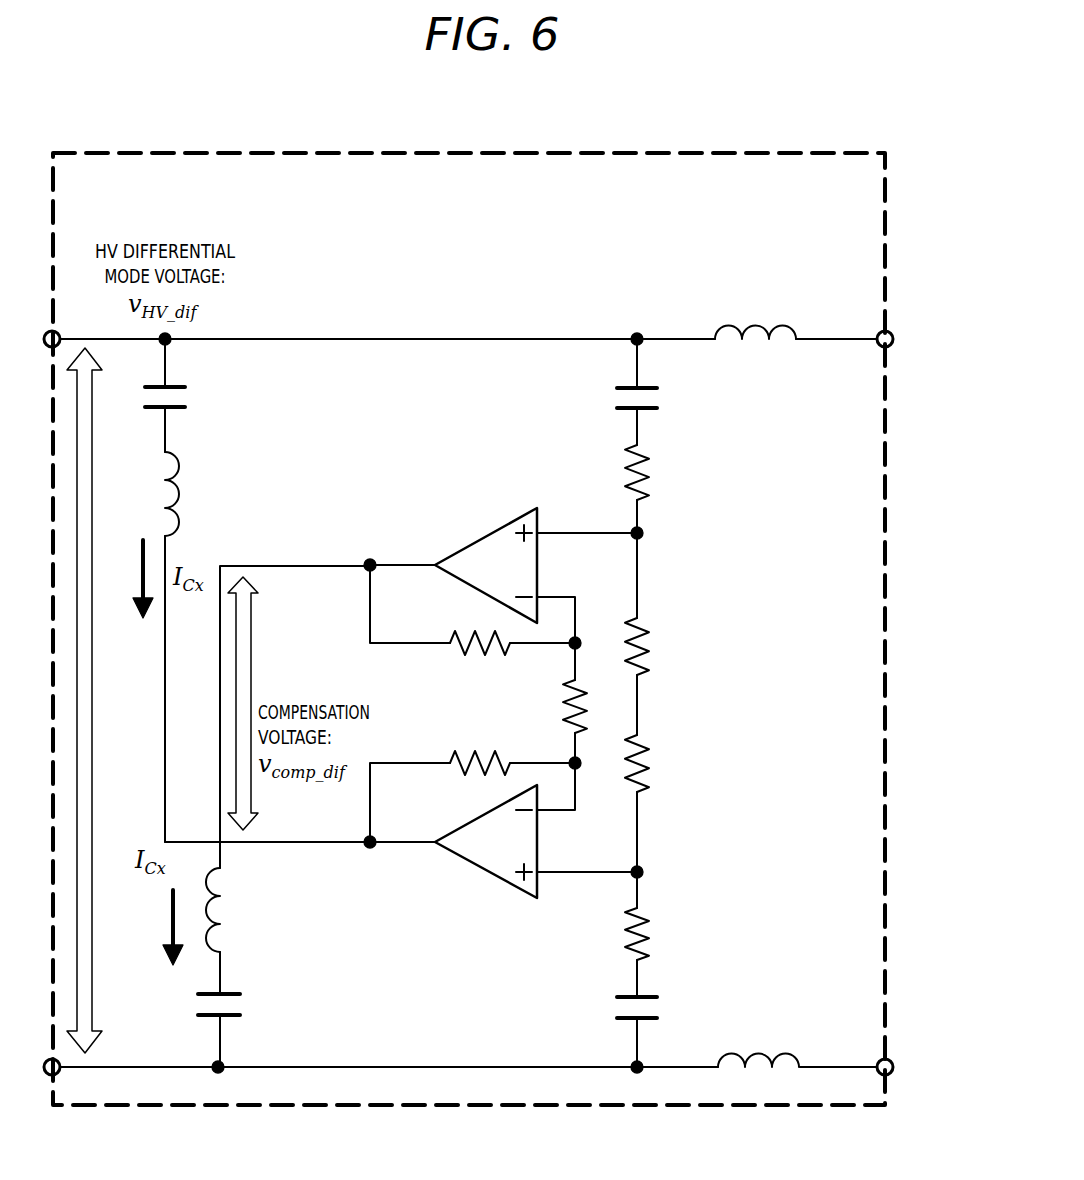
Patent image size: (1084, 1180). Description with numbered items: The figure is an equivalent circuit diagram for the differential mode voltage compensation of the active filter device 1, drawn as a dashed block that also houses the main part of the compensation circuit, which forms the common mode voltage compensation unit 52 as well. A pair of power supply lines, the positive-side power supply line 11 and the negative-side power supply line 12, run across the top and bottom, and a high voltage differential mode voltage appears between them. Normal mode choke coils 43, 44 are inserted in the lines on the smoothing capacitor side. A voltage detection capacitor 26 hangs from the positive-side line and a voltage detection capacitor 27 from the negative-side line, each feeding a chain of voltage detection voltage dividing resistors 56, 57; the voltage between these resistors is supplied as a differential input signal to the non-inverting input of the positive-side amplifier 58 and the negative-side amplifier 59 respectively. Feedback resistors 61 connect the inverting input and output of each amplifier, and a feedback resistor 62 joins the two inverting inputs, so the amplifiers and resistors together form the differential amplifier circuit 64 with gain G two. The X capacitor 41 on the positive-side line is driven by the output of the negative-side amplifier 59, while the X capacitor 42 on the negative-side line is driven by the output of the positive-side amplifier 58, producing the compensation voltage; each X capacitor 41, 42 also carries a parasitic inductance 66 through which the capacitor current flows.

The active filter device 1 is at (508, 581).
The positive-side power supply line 11 is at (268, 338).
The negative-side power supply line 12 is at (416, 1066).
The voltage detection capacitor 26 is at (630, 387).
The voltage detection capacitor 27 is at (624, 996).
The X capacitor 41 is at (160, 387).
The X capacitor 42 is at (212, 1016).
The normal mode choke coil 43 is at (757, 326).
The normal mode choke coil 44 is at (773, 1070).
The common mode voltage compensation unit 52 is at (885, 213).
The voltage detection voltage dividing resistor 56 is at (652, 472).
The voltage detection voltage dividing resistor 57 is at (645, 618).
The amplifier 58 is at (548, 860).
The amplifier 59 is at (548, 524).
The feedback resistor 61 is at (450, 646).
The feedback resistor 62 is at (592, 700).
The differential amplifier circuit 64 is at (503, 863).
The parasitic inductance 66 is at (178, 472).